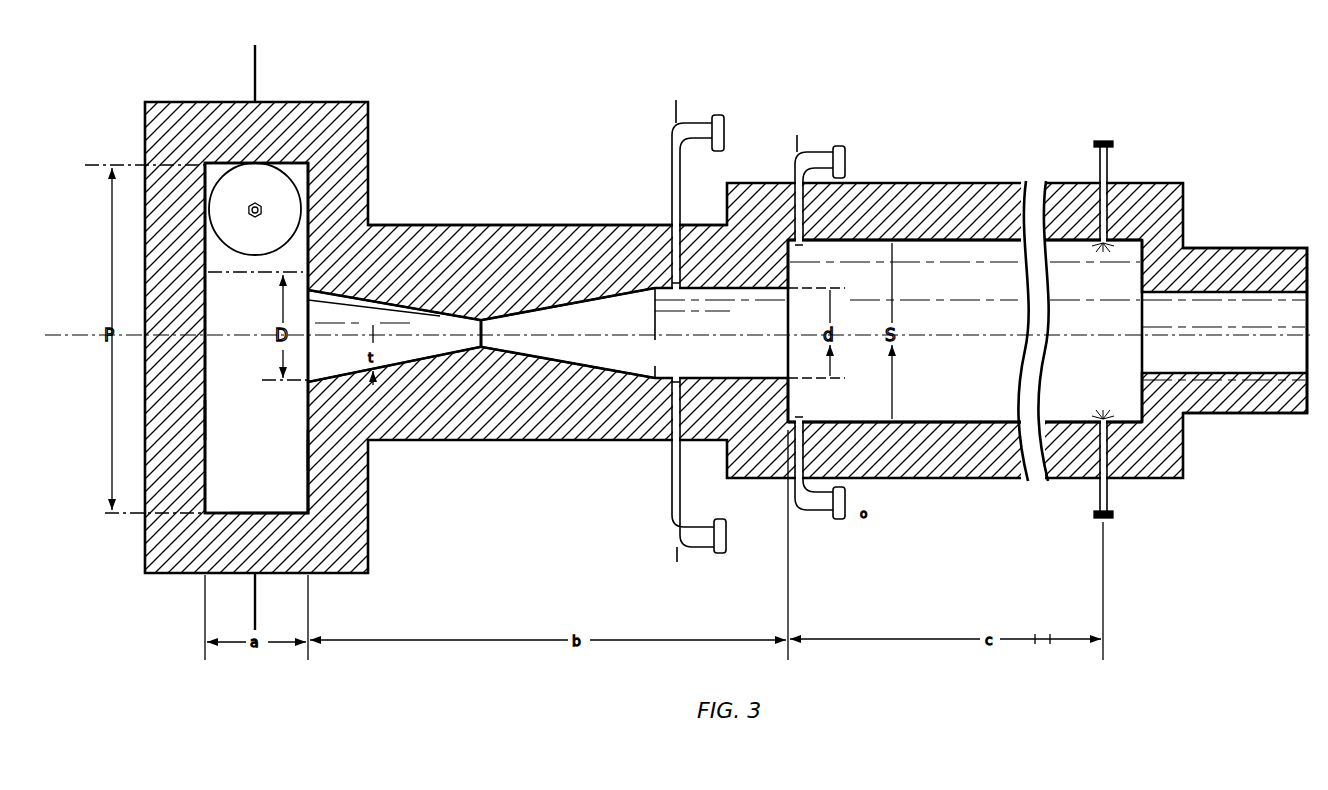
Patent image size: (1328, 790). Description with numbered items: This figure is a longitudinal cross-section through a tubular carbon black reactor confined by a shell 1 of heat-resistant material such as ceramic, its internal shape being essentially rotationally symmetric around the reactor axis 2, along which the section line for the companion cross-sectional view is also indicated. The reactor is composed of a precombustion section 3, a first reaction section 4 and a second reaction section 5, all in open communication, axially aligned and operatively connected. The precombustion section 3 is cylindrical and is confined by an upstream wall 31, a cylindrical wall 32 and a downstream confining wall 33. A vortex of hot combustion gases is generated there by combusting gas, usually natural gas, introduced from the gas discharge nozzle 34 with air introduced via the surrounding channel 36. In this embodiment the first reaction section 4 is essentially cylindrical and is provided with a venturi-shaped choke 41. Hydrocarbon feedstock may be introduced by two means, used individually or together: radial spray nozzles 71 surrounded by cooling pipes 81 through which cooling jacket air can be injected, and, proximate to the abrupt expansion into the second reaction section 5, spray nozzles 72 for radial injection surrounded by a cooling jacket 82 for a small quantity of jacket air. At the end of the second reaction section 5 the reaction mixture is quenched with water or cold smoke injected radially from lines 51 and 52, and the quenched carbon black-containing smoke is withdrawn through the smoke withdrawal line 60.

The shell 1 is at (480, 198).
The reactor axis 2 is at (253, 55).
The precombustion section 3 is at (232, 377).
The first reaction section 4 is at (660, 369).
The second reaction section 5 is at (966, 362).
The upstream wall 31 is at (207, 418).
The cylindrical wall 32 is at (242, 513).
The downstream confining wall 33 is at (307, 460).
The gas discharge nozzle 34 is at (262, 217).
The air channel 36 is at (262, 194).
The venturi-shaped choke 41 is at (362, 372).
The quenching fluid line 51 is at (1110, 153).
The quenching fluid line 52 is at (1094, 510).
The smoke withdrawal line 60 is at (1245, 312).
The radial spray nozzle 71 is at (679, 289).
The spray nozzle 72 is at (800, 244).
The cooling pipe 81 is at (671, 160).
The cooling jacket 82 is at (794, 162).